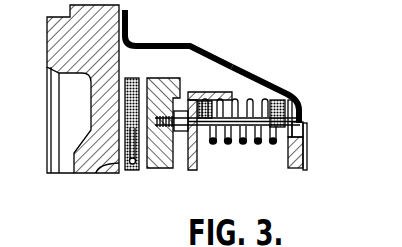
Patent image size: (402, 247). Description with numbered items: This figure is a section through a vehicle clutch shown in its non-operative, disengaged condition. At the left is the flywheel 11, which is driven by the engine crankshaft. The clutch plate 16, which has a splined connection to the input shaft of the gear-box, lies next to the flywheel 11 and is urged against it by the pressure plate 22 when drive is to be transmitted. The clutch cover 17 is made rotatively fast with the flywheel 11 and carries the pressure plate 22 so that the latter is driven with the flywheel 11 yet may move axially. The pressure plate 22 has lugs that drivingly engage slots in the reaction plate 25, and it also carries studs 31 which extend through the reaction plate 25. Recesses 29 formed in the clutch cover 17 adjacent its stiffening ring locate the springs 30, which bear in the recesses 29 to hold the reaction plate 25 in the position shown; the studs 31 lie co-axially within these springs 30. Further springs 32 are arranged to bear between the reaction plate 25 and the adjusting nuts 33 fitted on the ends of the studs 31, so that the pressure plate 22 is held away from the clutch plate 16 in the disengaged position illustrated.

The flywheel 11 is at (75, 51).
The clutch plate 16 is at (133, 78).
The clutch cover 17 is at (148, 43).
The pressure plate 22 is at (171, 80).
The reaction plate 25 is at (192, 100).
The recesses 29 is at (287, 91).
The springs 30 is at (240, 103).
The studs 31 is at (200, 131).
The further springs 32 is at (243, 143).
The adjusting nuts 33 is at (296, 112).